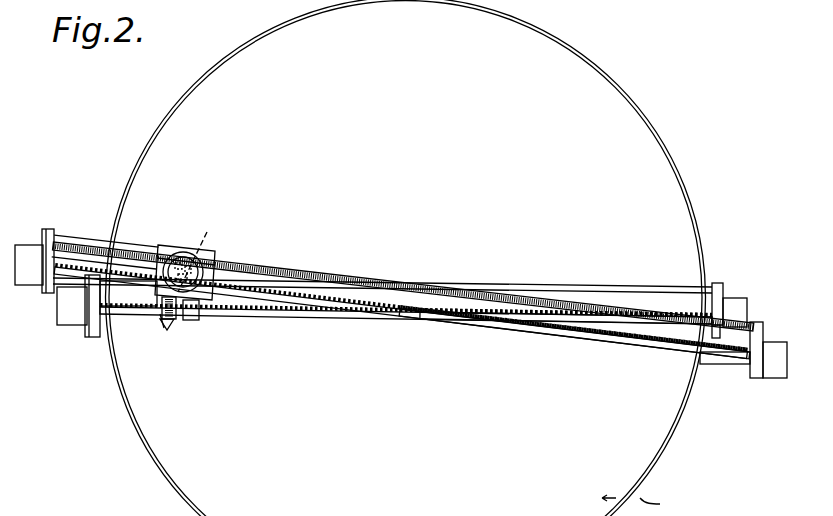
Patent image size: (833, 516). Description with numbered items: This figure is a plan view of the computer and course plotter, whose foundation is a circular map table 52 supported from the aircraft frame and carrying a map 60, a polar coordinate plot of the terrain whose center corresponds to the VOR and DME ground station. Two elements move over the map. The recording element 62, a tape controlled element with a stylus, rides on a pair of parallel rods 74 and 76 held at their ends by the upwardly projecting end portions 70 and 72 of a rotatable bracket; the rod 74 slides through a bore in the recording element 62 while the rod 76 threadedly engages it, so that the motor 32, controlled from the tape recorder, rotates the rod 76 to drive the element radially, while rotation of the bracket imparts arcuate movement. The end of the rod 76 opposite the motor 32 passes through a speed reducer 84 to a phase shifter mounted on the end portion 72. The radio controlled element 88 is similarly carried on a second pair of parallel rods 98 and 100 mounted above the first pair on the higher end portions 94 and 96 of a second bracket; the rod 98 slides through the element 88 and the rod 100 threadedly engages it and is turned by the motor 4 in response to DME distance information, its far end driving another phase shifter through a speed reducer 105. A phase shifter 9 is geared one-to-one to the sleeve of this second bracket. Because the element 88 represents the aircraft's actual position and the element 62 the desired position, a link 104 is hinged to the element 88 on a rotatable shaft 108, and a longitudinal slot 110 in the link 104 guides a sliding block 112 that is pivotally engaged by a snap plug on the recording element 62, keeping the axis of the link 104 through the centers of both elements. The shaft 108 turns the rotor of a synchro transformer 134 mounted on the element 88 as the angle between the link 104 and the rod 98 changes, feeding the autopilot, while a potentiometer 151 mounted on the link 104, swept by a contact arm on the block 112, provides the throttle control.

The motor 4 is at (27, 246).
The phase shifter 9 is at (147, 268).
The motor 32 is at (70, 320).
The circular map table 52 is at (655, 131).
The map 60 is at (642, 505).
The recording element 62 is at (199, 318).
The end portion of bracket 66 70 is at (93, 338).
The end portion of bracket 66 72 is at (723, 292).
The rod 74 is at (312, 276).
The rod 76 is at (312, 318).
The speed reducer 84 is at (745, 308).
The radio controlled element 88 is at (160, 246).
The end portion of bracket 90 94 is at (50, 229).
The end portion of bracket 90 96 is at (760, 327).
The rod 98 is at (670, 323).
The rod 100 is at (583, 339).
The link 104 is at (163, 330).
The speed reducer 105 is at (770, 370).
The rotatable shaft 108 is at (202, 253).
The longitudinal slot 110 is at (174, 324).
The sliding block 112 is at (155, 297).
The synchro transformer 134 is at (224, 263).
The potentiometer 151 is at (150, 316).